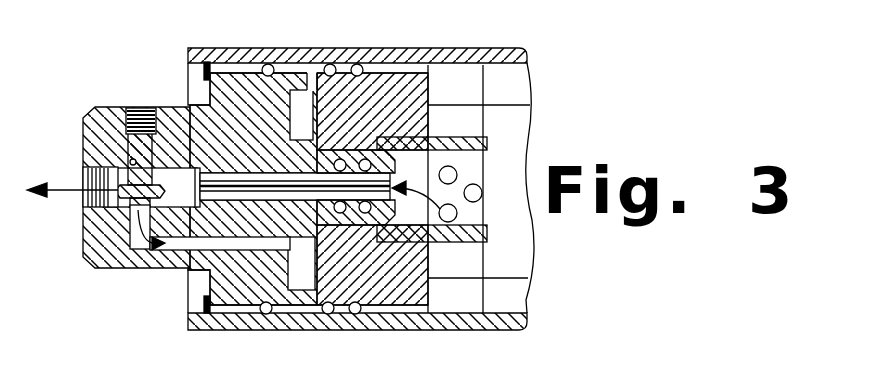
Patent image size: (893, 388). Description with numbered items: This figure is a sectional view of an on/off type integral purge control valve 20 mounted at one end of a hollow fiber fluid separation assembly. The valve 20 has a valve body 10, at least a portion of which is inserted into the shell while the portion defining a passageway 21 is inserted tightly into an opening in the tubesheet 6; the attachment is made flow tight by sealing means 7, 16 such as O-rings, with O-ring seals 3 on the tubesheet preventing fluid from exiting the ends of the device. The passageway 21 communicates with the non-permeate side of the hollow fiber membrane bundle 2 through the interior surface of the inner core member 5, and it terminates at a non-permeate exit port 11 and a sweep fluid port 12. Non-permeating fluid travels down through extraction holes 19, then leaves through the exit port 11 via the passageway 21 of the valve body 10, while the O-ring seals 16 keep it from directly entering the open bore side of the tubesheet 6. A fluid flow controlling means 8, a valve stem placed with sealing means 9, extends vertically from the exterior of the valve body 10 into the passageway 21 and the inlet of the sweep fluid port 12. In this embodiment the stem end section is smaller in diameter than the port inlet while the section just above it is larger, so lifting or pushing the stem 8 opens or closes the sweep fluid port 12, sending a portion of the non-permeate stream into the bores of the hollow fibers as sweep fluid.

The hollow fiber membrane bundle 2 is at (463, 188).
The O-ring seals 3 is at (340, 213).
The inner core member 5 is at (462, 137).
The tubesheet 6 is at (427, 68).
The sealing means 7 is at (265, 314).
The fluid flow controlling means 8 is at (137, 107).
The sealing means 9 is at (125, 163).
The valve body 10 is at (215, 140).
The non-permeate exit port 11 is at (83, 202).
The sweep fluid port 12 is at (190, 252).
The O-ring seals 16 is at (345, 213).
The extraction holes 19 is at (473, 193).
The integral purge control valve 20 is at (235, 97).
The passageway 21 is at (288, 185).